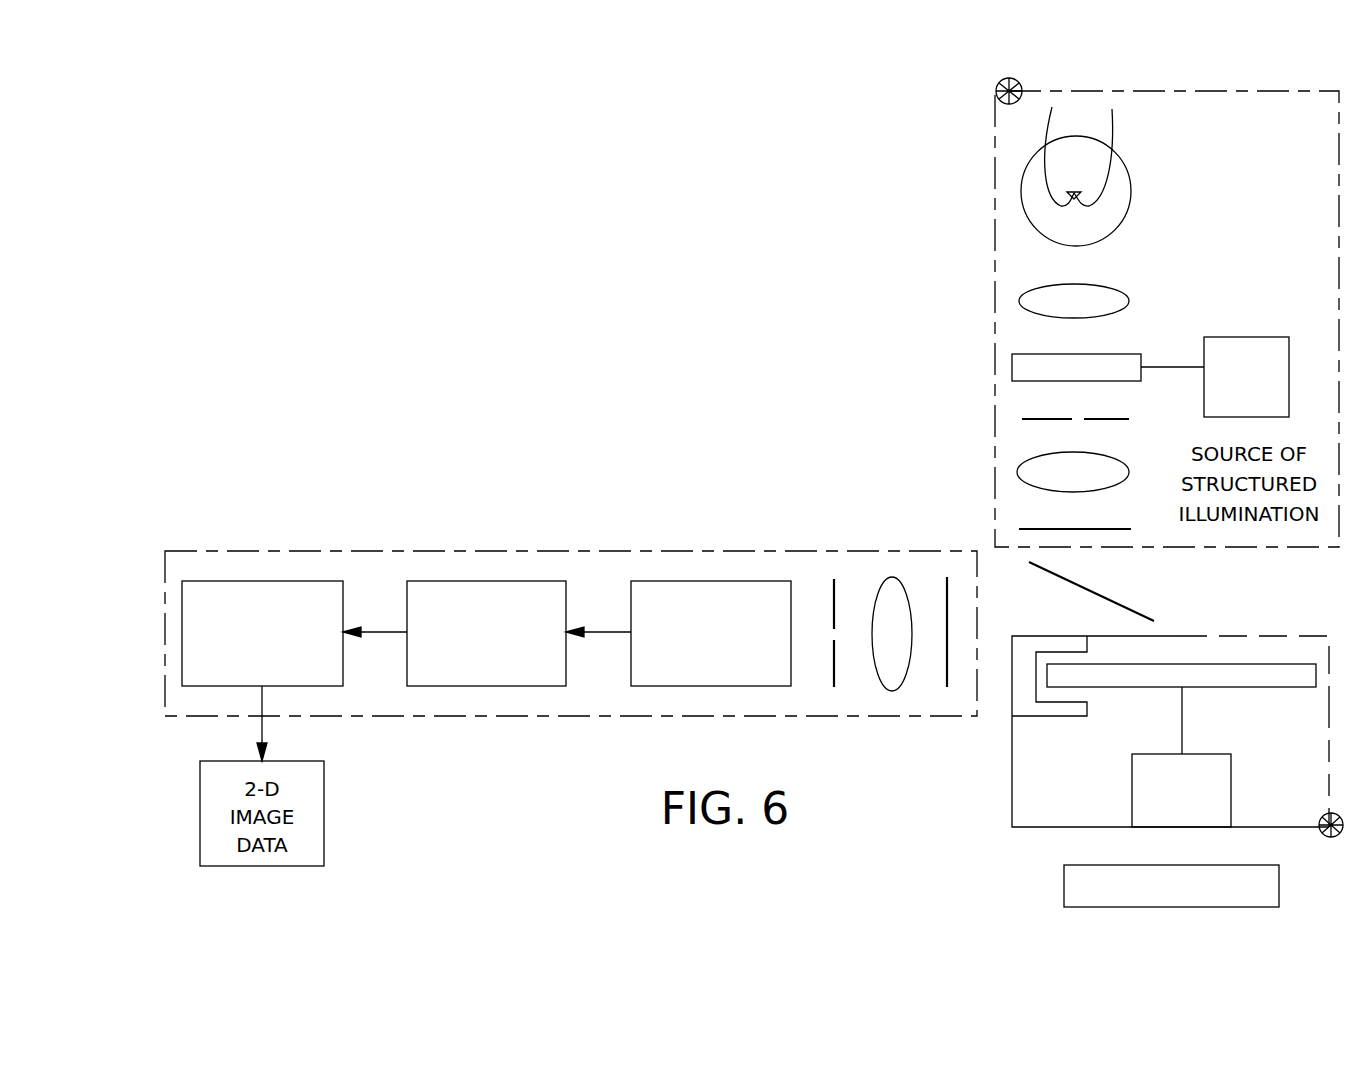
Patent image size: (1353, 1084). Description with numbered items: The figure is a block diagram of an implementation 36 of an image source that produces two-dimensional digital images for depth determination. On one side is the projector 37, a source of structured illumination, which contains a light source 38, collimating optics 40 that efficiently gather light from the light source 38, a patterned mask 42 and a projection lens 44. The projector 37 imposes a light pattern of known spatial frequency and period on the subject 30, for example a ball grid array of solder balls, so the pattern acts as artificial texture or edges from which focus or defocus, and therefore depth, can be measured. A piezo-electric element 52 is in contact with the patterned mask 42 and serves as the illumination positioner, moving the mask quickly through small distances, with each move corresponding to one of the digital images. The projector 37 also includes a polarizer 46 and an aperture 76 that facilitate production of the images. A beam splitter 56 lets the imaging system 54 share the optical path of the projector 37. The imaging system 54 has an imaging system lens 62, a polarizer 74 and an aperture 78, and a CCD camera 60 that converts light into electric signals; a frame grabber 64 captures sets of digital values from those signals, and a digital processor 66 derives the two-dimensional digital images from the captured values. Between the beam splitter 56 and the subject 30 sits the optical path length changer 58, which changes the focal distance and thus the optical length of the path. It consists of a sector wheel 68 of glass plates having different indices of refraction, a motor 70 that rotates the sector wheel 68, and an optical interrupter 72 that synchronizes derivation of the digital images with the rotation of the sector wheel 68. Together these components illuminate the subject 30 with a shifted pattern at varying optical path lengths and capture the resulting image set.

The subject 30 is at (1273, 893).
The implementation of the image source 36 is at (706, 320).
The projector 37 is at (996, 200).
The light source 38 is at (1125, 165).
The collimating optics 40 is at (1112, 290).
The patterned mask 42 is at (1110, 355).
The projection lens 44 is at (1115, 462).
The polarizer 46 is at (1112, 530).
The piezo-electric element 52 is at (1258, 338).
The imaging system 54 is at (668, 552).
The beam splitter 56 is at (1107, 600).
The optical path length changer 58 is at (1222, 637).
The CCD camera 60 is at (732, 582).
The imaging system lens 62 is at (880, 590).
The frame grabber 64 is at (440, 582).
The digital processor 66 is at (224, 582).
The sector wheel 68 is at (1242, 688).
The motor 70 is at (1232, 782).
The optical interrupter 72 is at (1042, 717).
The polarizer 74 is at (948, 670).
The aperture 76 is at (1117, 420).
The aperture 78 is at (834, 600).